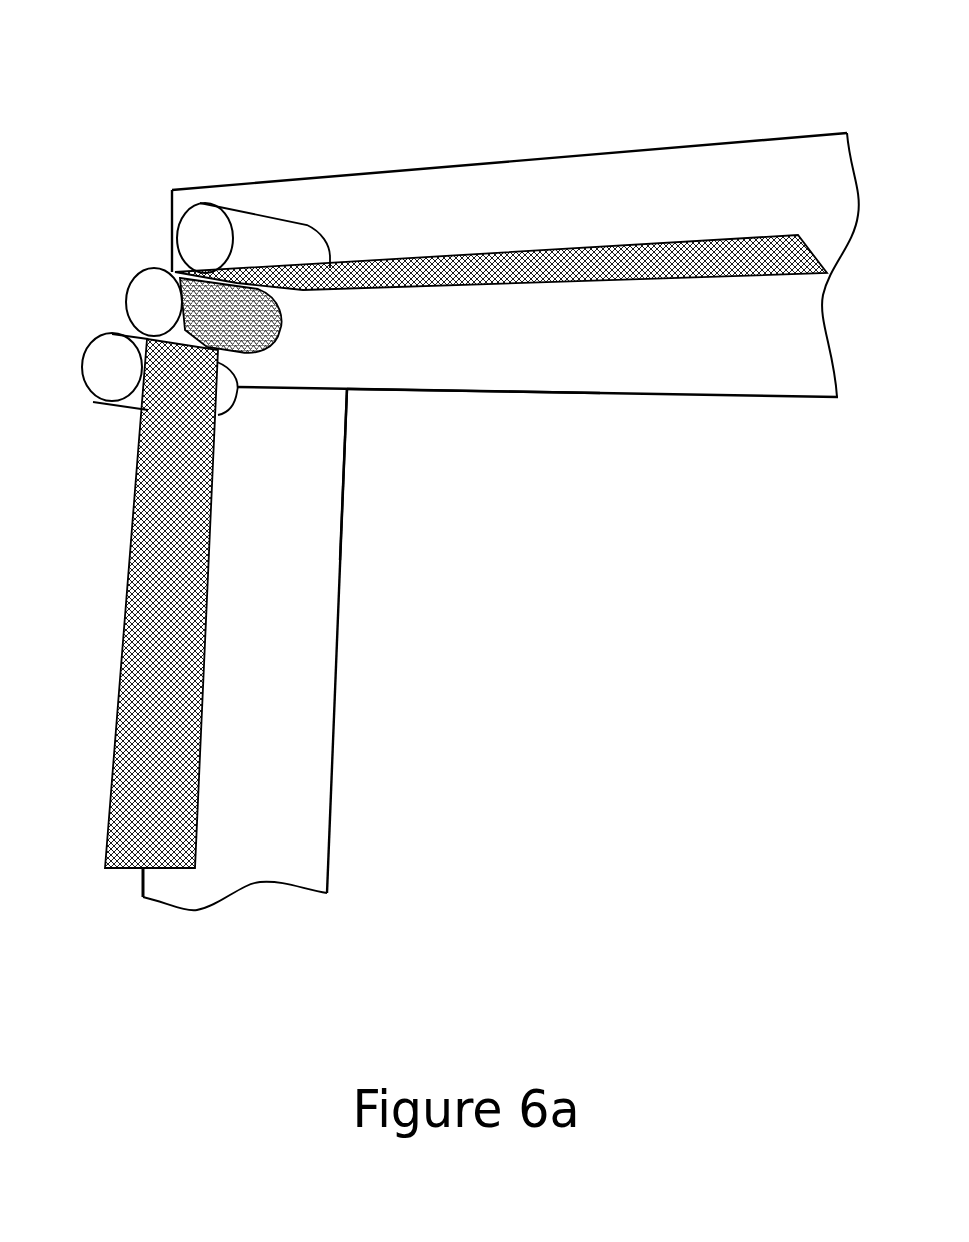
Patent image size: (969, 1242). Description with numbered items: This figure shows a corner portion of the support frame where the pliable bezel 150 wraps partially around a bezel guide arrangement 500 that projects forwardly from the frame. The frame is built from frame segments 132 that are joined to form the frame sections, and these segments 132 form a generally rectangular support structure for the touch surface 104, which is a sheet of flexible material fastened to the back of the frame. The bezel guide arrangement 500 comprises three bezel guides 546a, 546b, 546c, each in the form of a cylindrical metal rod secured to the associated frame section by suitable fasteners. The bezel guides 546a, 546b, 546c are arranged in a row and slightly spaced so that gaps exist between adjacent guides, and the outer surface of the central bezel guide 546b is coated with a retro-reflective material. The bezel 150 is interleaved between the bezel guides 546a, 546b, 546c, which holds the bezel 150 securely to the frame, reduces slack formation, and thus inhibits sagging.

The bezel guide arrangement 500 is at (299, 101).
The touch surface 104 is at (416, 545).
The frame segment 132 is at (628, 375).
The bezel 150 is at (193, 857).
The bezel guide 546a is at (110, 362).
The central bezel guide 546b is at (155, 296).
The bezel guide 546c is at (205, 225).